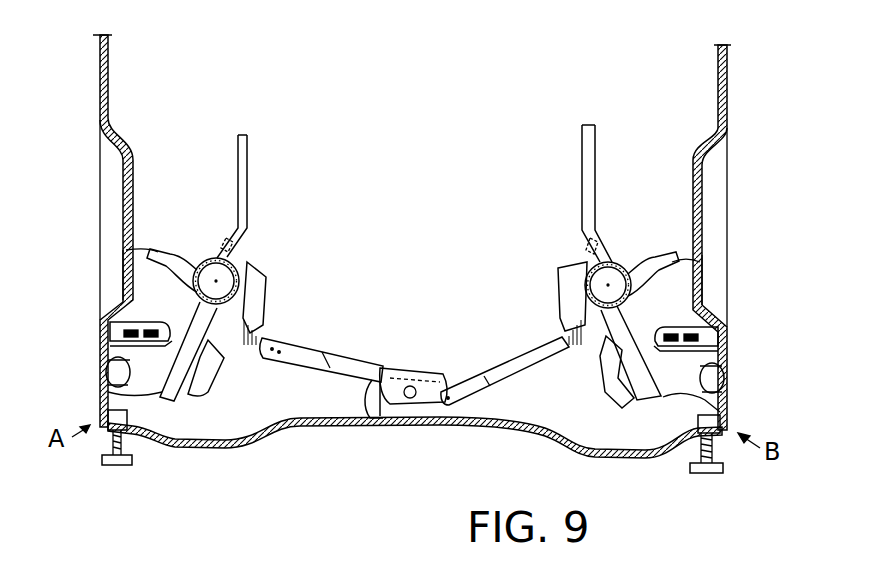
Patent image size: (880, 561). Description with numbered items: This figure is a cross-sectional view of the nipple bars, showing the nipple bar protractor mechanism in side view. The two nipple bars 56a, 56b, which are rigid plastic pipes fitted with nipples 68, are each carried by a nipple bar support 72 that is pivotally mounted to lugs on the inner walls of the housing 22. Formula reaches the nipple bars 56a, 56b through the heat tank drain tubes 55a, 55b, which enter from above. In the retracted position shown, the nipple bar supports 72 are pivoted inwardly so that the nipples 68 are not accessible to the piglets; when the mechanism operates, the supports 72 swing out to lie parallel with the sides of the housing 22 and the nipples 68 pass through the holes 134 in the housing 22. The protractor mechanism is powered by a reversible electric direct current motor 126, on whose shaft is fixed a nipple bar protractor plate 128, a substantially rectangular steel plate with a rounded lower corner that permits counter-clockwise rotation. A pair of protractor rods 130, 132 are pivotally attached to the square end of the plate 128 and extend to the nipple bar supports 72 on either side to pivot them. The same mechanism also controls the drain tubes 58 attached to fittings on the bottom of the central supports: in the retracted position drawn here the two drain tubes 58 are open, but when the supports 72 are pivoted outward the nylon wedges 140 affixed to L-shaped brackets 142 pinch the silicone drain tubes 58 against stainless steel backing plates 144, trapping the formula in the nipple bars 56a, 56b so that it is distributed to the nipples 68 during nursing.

The housing 22 is at (108, 82).
The heat tank drain tube 55a is at (240, 135).
The heat tank drain tube 55b is at (588, 134).
The nipple bar 56a is at (214, 278).
The nipple bar 56b is at (614, 280).
The drain tube 58 is at (104, 394).
The nipple 68 is at (125, 252).
The nipple bar support 72 is at (255, 272).
The reversible electric direct current motor 126 is at (432, 368).
The nipple bar protractor plate 128 is at (374, 418).
The protractor rod 130 is at (540, 330).
The protractor rod 132 is at (350, 355).
The hole 134 is at (124, 266).
The nylon wedge 140 is at (108, 328).
The L-shaped bracket 142 is at (102, 359).
The stainless steel backing plate 144 is at (206, 390).